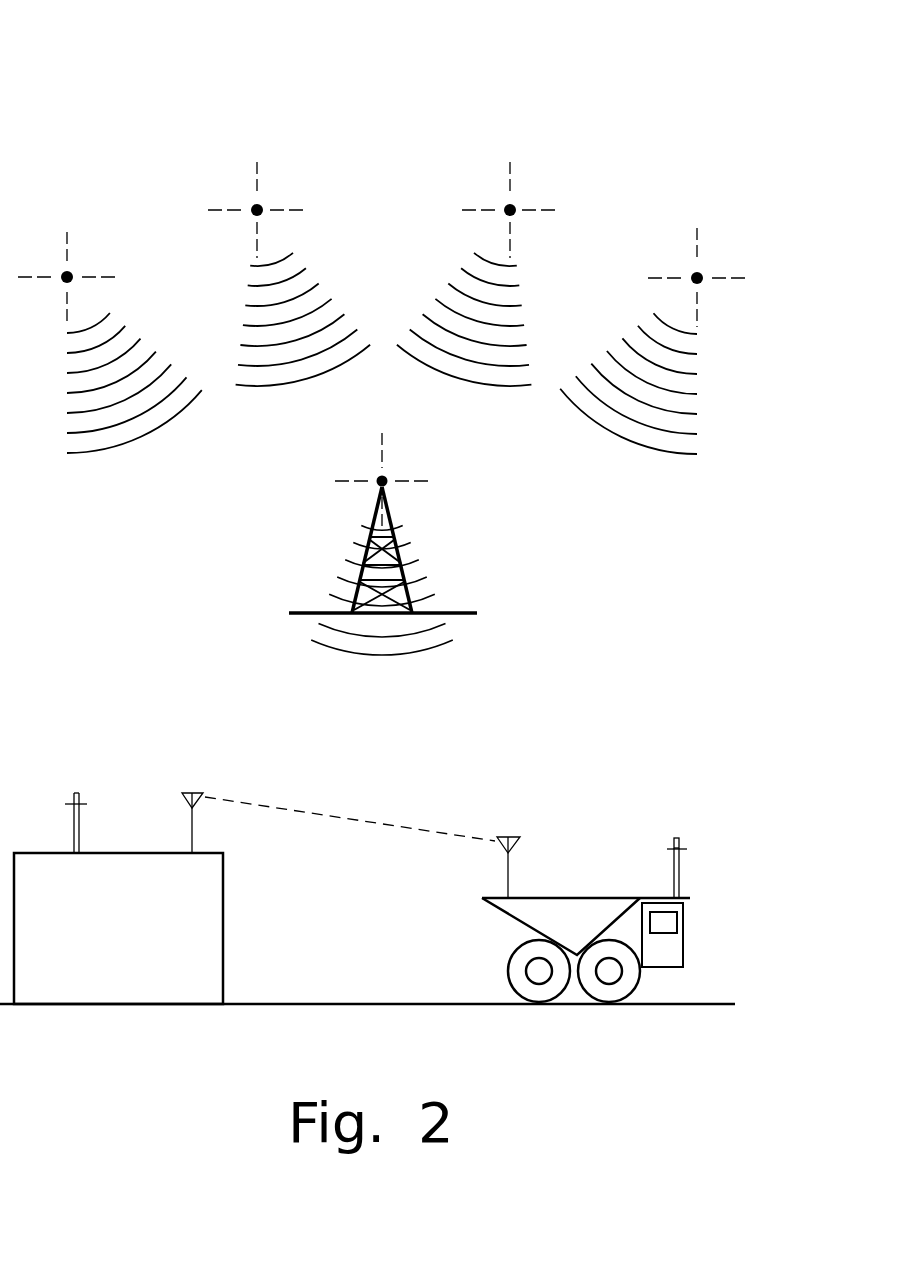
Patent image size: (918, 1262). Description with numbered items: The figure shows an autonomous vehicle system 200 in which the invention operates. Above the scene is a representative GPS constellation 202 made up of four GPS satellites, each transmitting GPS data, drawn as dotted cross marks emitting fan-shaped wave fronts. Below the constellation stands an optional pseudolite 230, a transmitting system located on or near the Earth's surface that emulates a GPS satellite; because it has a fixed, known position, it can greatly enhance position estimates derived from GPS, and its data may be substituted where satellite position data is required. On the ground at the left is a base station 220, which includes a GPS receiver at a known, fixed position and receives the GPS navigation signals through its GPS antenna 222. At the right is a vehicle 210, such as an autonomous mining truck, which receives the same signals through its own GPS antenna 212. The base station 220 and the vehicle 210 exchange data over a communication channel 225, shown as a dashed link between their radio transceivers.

The autonomous vehicle system 200 is at (103, 35).
The GPS constellation 202 is at (503, 110).
The pseudolite 230 is at (394, 544).
The base station 220 is at (150, 940).
The GPS antenna 222 is at (106, 793).
The communication channel 225 is at (351, 828).
The vehicle 210 is at (634, 947).
The GPS antenna 212 is at (707, 837).